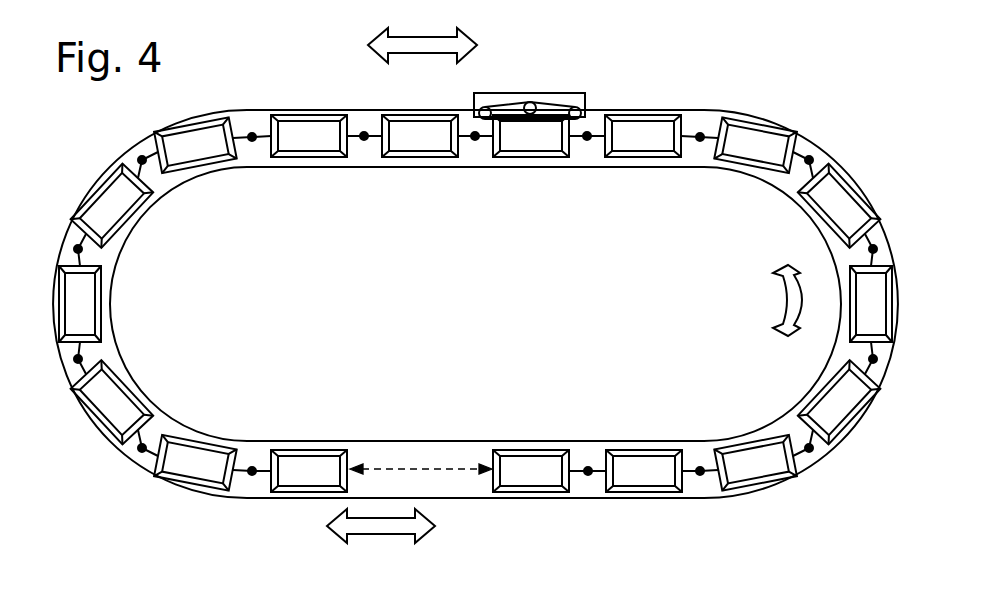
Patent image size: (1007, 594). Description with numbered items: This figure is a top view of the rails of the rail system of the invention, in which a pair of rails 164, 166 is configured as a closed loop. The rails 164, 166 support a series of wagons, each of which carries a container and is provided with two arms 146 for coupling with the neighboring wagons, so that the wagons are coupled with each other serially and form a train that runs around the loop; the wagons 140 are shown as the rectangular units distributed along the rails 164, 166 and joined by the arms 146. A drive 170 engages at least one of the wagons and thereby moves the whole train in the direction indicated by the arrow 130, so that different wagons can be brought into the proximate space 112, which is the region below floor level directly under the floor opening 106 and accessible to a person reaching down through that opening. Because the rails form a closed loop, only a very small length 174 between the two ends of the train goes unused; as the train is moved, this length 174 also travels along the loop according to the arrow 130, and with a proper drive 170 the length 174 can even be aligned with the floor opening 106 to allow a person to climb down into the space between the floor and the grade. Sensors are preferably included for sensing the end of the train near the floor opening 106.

The floor opening 106 is at (582, 126).
The proximate space 112 is at (475, 330).
The arrow 130 is at (401, 53).
The cassette carrier 140 is at (412, 158).
The arms 146 is at (867, 255).
The rail 164 is at (445, 441).
The rail 166 is at (577, 497).
The drive 170 is at (538, 93).
The length 174 is at (390, 466).